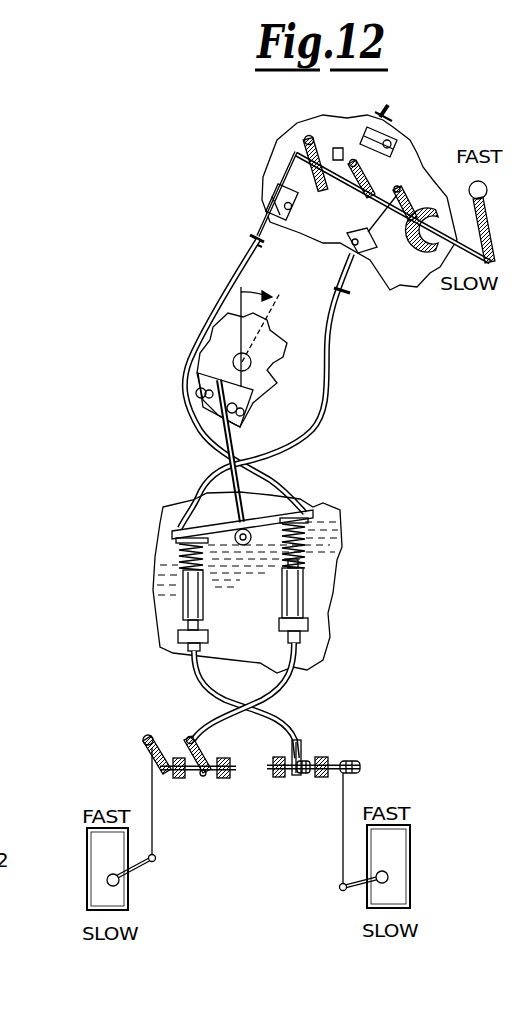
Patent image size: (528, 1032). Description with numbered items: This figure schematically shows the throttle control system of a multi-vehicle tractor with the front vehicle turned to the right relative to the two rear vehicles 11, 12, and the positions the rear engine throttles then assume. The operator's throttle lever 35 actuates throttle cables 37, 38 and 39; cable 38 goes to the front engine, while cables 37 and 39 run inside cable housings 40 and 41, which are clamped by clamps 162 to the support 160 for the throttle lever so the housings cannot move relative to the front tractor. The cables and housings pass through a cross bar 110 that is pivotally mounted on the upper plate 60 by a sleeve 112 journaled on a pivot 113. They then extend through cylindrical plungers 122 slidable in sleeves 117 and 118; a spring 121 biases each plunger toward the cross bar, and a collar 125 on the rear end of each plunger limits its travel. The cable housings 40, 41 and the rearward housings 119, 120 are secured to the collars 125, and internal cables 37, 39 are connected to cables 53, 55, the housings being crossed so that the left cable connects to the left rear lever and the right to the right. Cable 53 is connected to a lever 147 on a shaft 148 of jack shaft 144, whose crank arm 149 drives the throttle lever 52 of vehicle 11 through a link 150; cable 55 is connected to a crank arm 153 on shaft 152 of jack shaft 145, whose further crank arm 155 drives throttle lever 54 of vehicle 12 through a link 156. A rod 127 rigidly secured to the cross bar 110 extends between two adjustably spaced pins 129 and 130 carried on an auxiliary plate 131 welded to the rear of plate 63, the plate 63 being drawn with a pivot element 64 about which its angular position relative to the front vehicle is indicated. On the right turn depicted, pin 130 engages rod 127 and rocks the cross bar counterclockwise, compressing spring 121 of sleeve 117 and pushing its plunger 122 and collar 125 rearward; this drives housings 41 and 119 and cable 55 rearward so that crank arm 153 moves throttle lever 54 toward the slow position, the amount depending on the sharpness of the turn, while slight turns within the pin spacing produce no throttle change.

The tractor vehicle 11 is at (82, 850).
The tractor vehicle 12 is at (411, 852).
The throttle lever 35 is at (470, 184).
The throttle cable 37 is at (288, 170).
The throttle cable 38 is at (402, 148).
The throttle cable 39 is at (390, 216).
The cable housing 40 is at (226, 300).
The cable housing 41 is at (335, 325).
The throttle control lever 52 is at (140, 872).
The cable 53 is at (197, 745).
The throttle control lever 54 is at (340, 889).
The throttle control cable 55 is at (289, 755).
The upper plate 60 is at (333, 565).
The plate 63 is at (275, 376).
The pivot 64 is at (233, 358).
The cross bar 110 is at (172, 527).
The sleeve 112 is at (306, 545).
The pivot 113 is at (275, 507).
The sleeve 117 is at (180, 606).
The sleeve 118 is at (303, 595).
The cable housing 119 is at (200, 686).
The cable housing 120 is at (300, 664).
The spring 121 is at (182, 556).
The plunger 122 is at (178, 633).
The collar 125 is at (310, 624).
The rod 127 is at (218, 482).
The pin 129 is at (196, 394).
The pin 130 is at (245, 410).
The auxiliary plate 131 is at (212, 412).
The jack shaft 144 is at (175, 733).
The jack shaft 145 is at (348, 754).
The lever 147 is at (150, 744).
The shaft 148 is at (198, 778).
The crank arm 149 is at (146, 752).
The link 150 is at (150, 809).
The shaft 152 is at (313, 762).
The crank arm 153 is at (300, 776).
The crank arm 155 is at (360, 770).
The link 156 is at (345, 798).
The support 160 is at (405, 282).
The clamp 162 is at (264, 196).